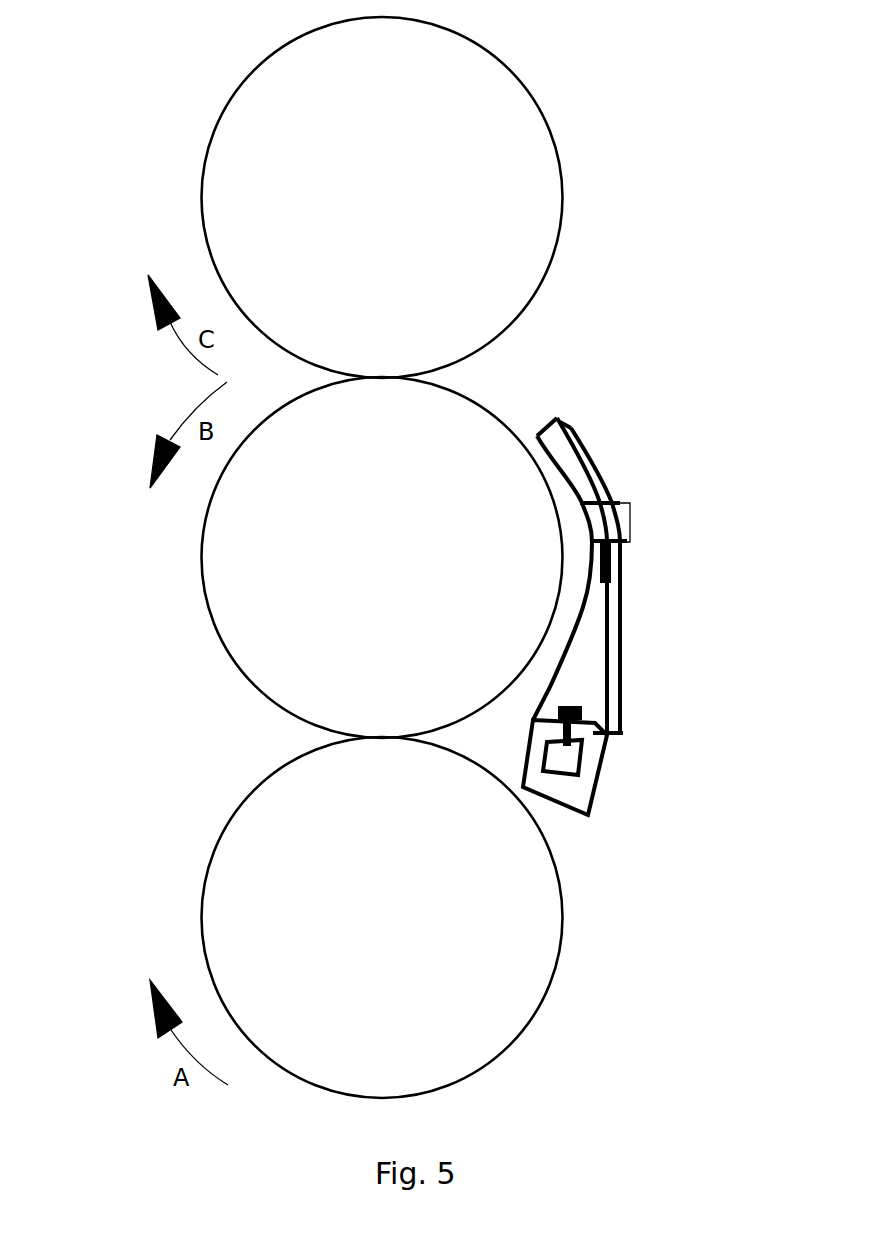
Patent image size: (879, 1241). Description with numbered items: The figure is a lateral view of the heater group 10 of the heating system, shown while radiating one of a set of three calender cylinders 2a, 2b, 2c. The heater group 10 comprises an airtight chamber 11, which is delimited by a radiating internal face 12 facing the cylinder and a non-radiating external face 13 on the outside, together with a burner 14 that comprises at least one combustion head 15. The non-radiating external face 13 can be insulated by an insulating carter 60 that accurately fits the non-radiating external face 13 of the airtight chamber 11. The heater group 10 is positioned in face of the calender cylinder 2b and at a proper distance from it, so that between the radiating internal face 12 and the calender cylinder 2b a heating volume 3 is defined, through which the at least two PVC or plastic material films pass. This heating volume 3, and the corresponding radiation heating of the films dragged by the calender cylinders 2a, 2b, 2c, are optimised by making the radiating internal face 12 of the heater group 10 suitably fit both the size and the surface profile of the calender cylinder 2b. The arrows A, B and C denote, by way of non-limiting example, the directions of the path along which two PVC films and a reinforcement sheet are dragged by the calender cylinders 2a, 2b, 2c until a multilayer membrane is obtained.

The calender cylinder 2a is at (202, 922).
The calender cylinder 2b is at (202, 585).
The calender cylinder 2c is at (200, 178).
The heating volume 3 is at (569, 605).
The heater group 10 is at (630, 418).
The airtight chamber 11 is at (590, 638).
The radiating internal face 12 is at (553, 468).
The non-radiating external face 13 is at (608, 483).
The burner 14 is at (601, 750).
The combustion head 15 is at (582, 706).
The insulating carter 60 is at (621, 638).